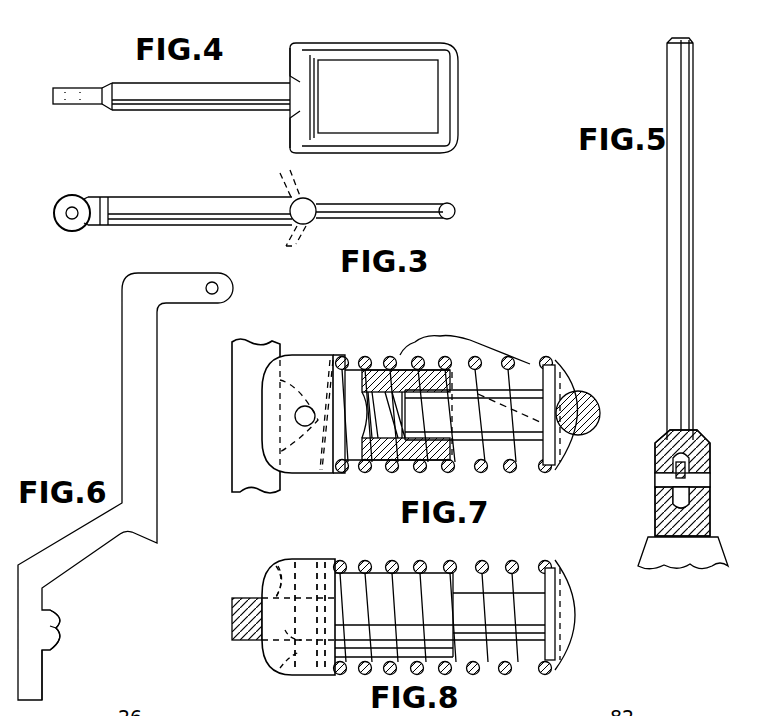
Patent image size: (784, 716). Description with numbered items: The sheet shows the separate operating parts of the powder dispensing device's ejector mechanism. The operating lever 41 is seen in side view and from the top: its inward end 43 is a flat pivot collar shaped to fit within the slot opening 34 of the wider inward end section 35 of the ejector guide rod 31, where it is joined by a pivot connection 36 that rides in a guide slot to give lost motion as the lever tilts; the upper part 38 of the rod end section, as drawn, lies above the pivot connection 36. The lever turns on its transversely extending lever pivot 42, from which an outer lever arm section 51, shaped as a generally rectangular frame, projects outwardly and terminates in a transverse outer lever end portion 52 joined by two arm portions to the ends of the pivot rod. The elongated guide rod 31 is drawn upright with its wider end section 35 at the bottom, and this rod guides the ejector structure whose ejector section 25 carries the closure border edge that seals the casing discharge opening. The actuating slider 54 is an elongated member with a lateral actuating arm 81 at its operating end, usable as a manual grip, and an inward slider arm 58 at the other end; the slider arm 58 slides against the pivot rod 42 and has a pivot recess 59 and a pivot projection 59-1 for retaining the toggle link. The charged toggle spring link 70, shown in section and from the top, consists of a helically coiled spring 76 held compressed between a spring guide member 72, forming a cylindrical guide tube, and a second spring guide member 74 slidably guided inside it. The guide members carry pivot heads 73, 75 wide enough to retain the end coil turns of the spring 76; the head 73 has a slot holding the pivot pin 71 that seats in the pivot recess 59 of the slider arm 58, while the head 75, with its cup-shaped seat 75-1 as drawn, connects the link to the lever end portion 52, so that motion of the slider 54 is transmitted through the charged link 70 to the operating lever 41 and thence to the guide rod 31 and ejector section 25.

In FIG. 5, the ejector section 25 is at (706, 560).
In FIG. 5, the guide rod 31 is at (668, 200).
In FIG. 5, the slot opening 34 is at (666, 446).
In FIG. 5, the inward end section 35 is at (706, 522).
In FIG. 5, the pivot connection 36 is at (704, 480).
In FIG. 5, the upper block 38 is at (708, 468).
In FIG. 4, the operating lever 41 is at (210, 110).
In FIG. 3, the operating lever 41 is at (200, 197).
In FIG. 4, the lever pivot 42 is at (292, 60).
In FIG. 3, the lever pivot 42 is at (296, 208).
In FIG. 4, the inward end 43 is at (90, 108).
In FIG. 3, the inward end 43 is at (68, 196).
In FIG. 4, the outer lever arm section 51 is at (386, 45).
In FIG. 3, the outer lever arm section 51 is at (394, 204).
In FIG. 7, the outer lever arm section 51 is at (524, 366).
In FIG. 4, the outer lever end portion 52 is at (456, 118).
In FIG. 3, the outer lever end portion 52 is at (455, 207).
In FIG. 7, the outer lever end portion 52 is at (584, 394).
In FIG. 6, the actuating slider 54 is at (158, 462).
In FIG. 6, the inward slider arm 58 is at (42, 680).
In FIG. 7, the inward slider arm 58 is at (232, 402).
In FIG. 8, the inward slider arm 58 is at (240, 597).
In FIG. 6, the pivot recess 59 is at (62, 630).
In FIG. 7, the pivot recess 59 is at (312, 462).
In FIG. 8, the pivot recess 59 is at (310, 676).
In FIG. 6, the pivot projection 59-1 is at (50, 615).
In FIG. 8, the pivot projection 59-1 is at (272, 560).
In FIG. 7, the charged toggle spring link 70 is at (460, 321).
In FIG. 7, the pivot pin 71 is at (305, 404).
In FIG. 8, the pivot pin 71 is at (290, 672).
In FIG. 7, the spring guide member 72 is at (385, 370).
In FIG. 8, the spring guide member 72 is at (404, 580).
In FIG. 7, the pivot head 73 is at (318, 372).
In FIG. 8, the pivot head 73 is at (338, 540).
In FIG. 7, the spring guide member 74 is at (470, 432).
In FIG. 8, the spring guide member 74 is at (498, 592).
In FIG. 7, the pivot head 75 is at (550, 466).
In FIG. 8, the pivot head 75 is at (574, 630).
In FIG. 7, the cup 75-1 is at (574, 446).
In FIG. 7, the helically coiled spring 76 is at (470, 360).
In FIG. 8, the helically coiled spring 76 is at (392, 566).
In FIG. 6, the lateral actuating arm 81 is at (180, 303).